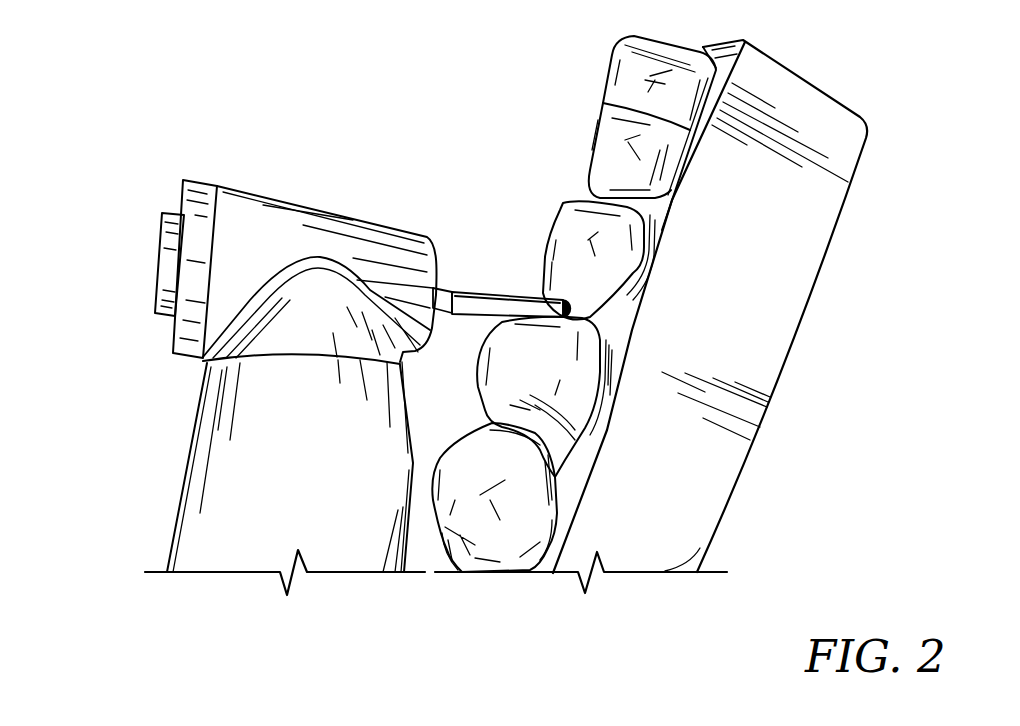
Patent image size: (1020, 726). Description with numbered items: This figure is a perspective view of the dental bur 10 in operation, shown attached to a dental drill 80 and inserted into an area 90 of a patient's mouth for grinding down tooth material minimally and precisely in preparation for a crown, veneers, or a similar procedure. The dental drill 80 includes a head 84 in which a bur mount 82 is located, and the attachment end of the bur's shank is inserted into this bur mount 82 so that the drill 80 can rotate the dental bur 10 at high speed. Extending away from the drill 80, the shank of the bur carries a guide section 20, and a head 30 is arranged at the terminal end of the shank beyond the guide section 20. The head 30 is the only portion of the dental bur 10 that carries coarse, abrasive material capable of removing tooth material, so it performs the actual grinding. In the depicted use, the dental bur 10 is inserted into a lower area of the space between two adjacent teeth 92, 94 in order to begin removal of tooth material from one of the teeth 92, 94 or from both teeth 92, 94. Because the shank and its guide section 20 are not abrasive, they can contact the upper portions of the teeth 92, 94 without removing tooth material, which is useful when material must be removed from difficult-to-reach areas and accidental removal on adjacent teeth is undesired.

The dental bur 10 is at (471, 234).
The guide section 20 is at (519, 270).
The head 30 is at (567, 297).
The dental drill 80 is at (146, 261).
The bur mount 82 is at (448, 290).
The head 84 is at (255, 220).
The area 90 is at (735, 455).
The tooth 92 is at (590, 278).
The tooth 94 is at (565, 405).